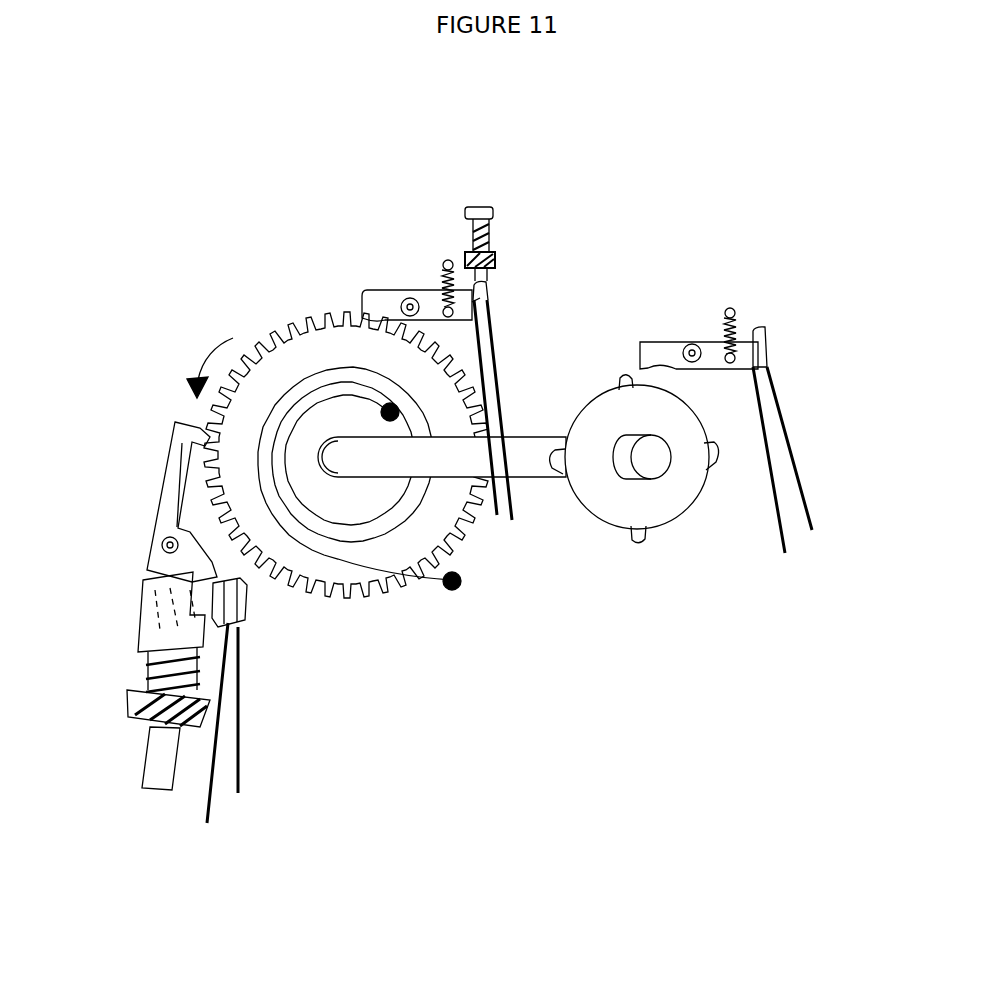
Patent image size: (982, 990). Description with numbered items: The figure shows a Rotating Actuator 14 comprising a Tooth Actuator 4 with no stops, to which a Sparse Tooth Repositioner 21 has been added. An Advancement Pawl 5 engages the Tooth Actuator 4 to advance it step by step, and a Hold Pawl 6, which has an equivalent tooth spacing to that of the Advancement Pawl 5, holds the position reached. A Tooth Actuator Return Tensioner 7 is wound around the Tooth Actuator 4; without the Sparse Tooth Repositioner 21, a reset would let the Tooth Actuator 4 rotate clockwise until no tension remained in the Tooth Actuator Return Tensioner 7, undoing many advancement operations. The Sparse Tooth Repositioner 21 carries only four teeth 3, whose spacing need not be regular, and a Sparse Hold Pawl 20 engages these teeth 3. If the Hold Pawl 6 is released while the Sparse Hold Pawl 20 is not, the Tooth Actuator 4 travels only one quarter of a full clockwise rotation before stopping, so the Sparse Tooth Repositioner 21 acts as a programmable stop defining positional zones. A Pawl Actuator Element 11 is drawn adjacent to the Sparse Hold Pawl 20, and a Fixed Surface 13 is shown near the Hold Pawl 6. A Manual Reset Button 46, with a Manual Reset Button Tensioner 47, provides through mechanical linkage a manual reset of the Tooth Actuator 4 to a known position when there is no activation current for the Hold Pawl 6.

The teeth 3 is at (630, 545).
The Tooth Actuator 4 is at (273, 372).
The Advancement Pawl 5 is at (170, 489).
The Hold Pawl 6 is at (383, 303).
The Tooth Actuator Return Tensioner 7 is at (332, 560).
The Pawl Actuator Element 11 is at (838, 440).
The Fixed Surface 13 is at (497, 261).
The Rotating Actuator 14 is at (442, 457).
The Sparse Hold Pawl 20 is at (652, 356).
The Sparse Tooth Repositioner 21 is at (673, 493).
The Manual Reset Button 46 is at (470, 206).
The Manual Reset Button Tensioner 47 is at (470, 243).